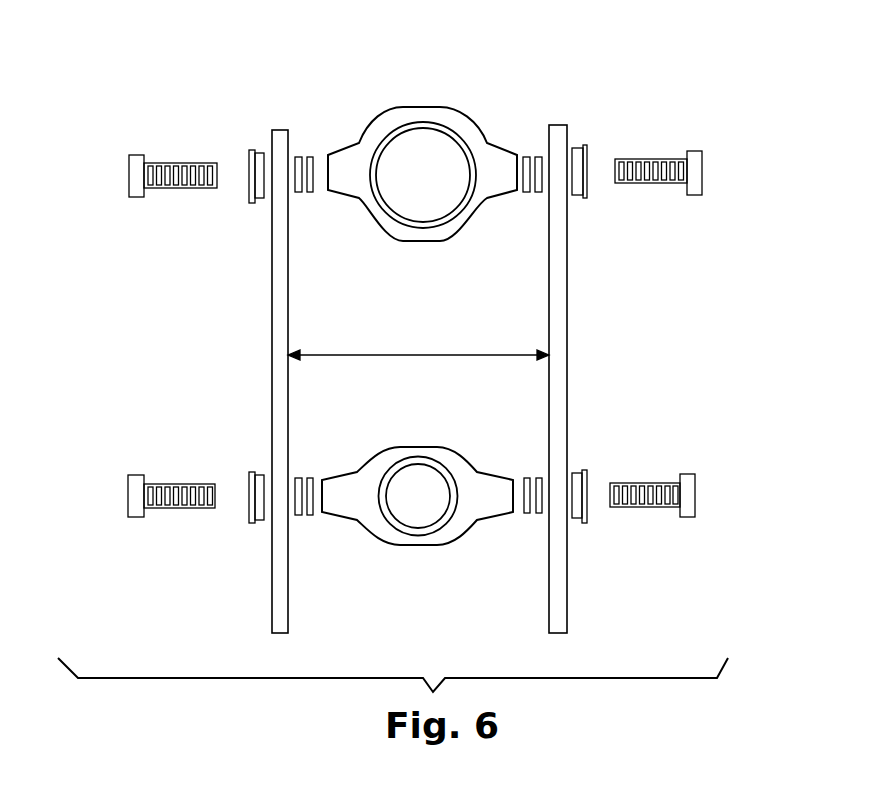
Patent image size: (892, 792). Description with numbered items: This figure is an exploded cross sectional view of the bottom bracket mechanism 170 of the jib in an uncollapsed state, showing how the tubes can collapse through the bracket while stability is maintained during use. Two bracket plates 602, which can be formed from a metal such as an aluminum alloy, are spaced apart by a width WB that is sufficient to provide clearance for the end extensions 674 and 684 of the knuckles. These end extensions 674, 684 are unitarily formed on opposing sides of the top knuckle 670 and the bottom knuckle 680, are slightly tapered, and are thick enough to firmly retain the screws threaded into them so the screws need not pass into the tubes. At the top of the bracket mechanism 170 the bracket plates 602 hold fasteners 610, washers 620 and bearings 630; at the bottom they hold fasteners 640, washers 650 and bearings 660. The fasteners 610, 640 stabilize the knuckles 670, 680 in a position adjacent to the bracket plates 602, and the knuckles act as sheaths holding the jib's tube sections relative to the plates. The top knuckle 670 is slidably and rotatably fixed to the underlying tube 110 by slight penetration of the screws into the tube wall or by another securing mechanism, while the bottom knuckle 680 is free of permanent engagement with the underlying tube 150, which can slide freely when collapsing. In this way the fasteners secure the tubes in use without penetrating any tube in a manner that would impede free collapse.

The bottom bracket mechanism 170 is at (429, 160).
The end extension 674 is at (352, 145).
The top knuckle 670 is at (392, 225).
The tube 110 is at (430, 223).
The bracket plates 602 is at (270, 328).
The fasteners 610 is at (179, 163).
The bearings 630 is at (257, 152).
The washers 620 is at (298, 192).
The width/spacing between the plates WB is at (373, 355).
The tube 150 is at (417, 531).
The end extension 684 is at (355, 472).
The bottom knuckle 680 is at (387, 532).
The fasteners 640 is at (175, 484).
The bearings 660 is at (260, 522).
The washers 650 is at (298, 515).